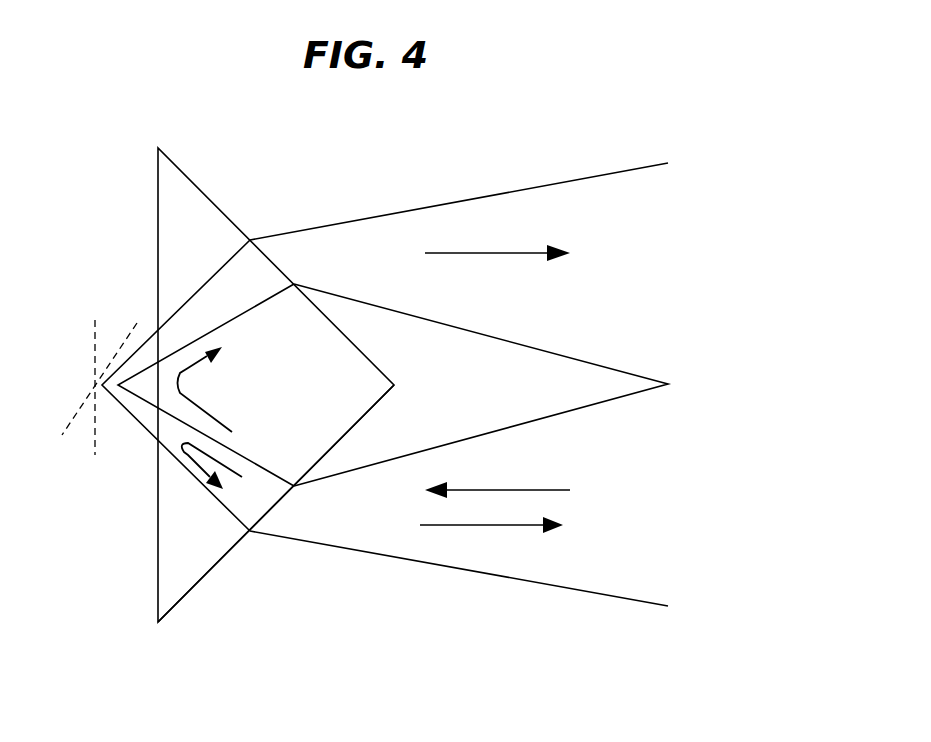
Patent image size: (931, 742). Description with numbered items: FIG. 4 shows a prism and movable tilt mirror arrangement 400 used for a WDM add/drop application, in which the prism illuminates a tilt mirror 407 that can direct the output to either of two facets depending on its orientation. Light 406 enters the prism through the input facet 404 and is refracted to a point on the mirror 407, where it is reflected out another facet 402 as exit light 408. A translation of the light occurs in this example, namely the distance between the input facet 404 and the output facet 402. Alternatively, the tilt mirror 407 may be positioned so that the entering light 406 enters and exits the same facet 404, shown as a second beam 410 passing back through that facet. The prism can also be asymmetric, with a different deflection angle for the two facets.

The optical switching system 400 is at (378, 120).
The facet 402 is at (215, 205).
The facet 404 is at (210, 573).
The light 406 is at (570, 490).
The mirror 407 is at (93, 381).
The exit light 408 is at (570, 253).
The transmitted light beam 410 is at (563, 525).